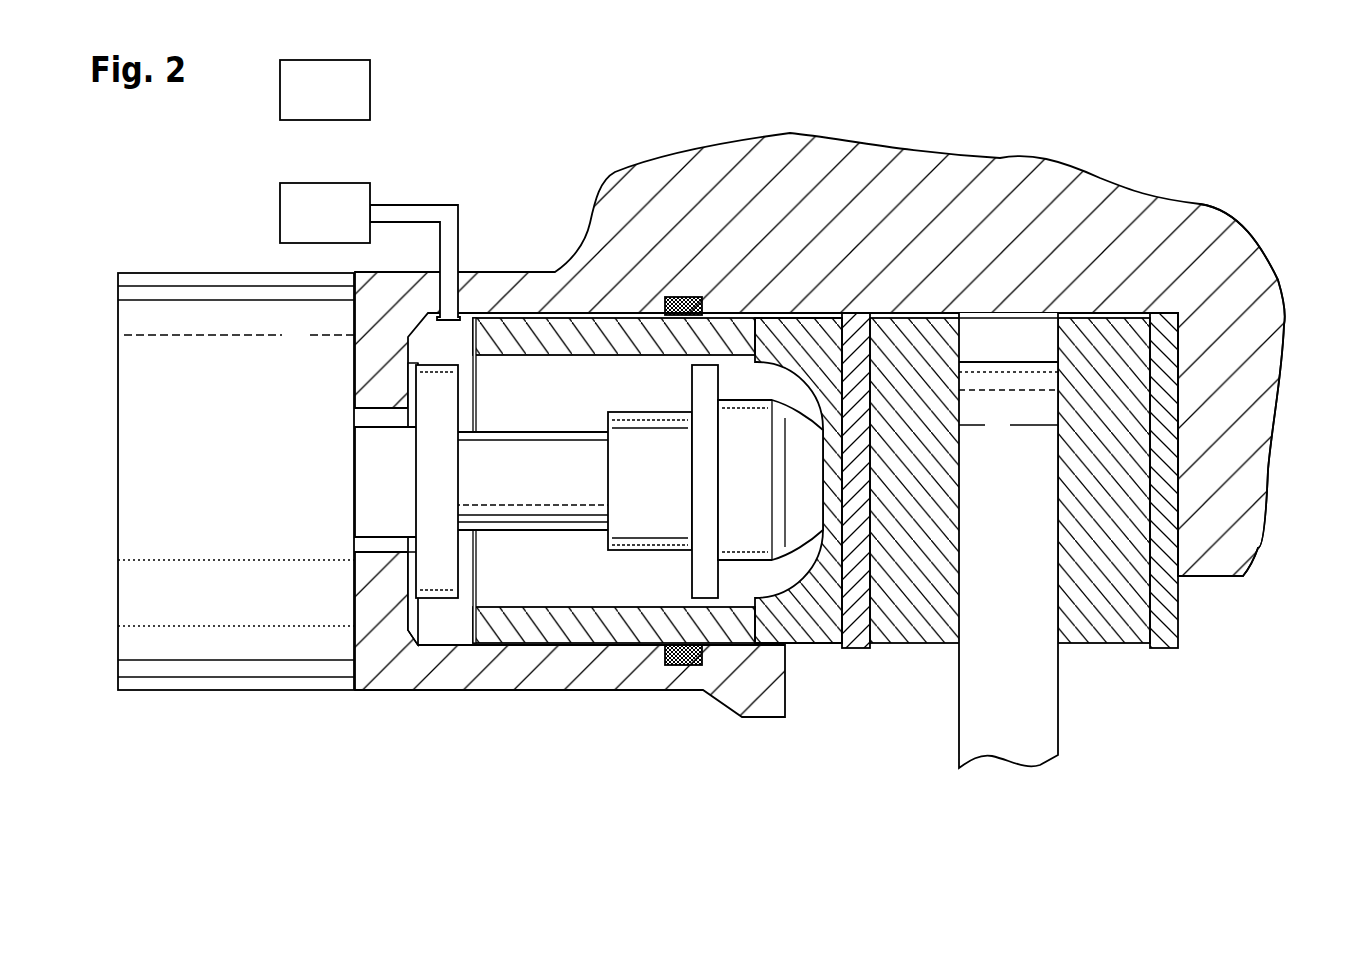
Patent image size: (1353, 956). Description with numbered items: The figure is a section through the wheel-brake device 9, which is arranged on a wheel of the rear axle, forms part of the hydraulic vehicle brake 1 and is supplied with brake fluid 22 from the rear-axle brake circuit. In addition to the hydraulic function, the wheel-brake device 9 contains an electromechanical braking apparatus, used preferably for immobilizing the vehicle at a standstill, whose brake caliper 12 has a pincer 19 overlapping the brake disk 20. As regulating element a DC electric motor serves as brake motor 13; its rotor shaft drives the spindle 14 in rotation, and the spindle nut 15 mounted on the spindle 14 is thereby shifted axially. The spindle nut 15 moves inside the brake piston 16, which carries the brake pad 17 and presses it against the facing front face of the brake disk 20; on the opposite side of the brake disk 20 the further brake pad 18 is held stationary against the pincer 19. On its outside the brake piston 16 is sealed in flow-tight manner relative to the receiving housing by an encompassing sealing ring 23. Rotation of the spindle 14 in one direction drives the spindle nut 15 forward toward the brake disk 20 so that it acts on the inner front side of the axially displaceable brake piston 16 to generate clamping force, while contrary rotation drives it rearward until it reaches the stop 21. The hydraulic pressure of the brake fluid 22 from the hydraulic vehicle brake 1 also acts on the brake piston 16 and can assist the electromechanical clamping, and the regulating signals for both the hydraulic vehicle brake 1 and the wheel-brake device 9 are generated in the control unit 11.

The hydraulic vehicle brake 1 is at (280, 208).
The wheel-brake device 9 is at (1180, 151).
The control unit 11 is at (370, 88).
The brake caliper 12 is at (907, 178).
The brake motor 13 is at (237, 668).
The spindle 14 is at (573, 517).
The spindle nut 15 is at (625, 543).
The brake piston 16 is at (527, 627).
The brake pad 17 is at (912, 645).
The further brake pad 18 is at (1098, 645).
The pincer 19 is at (1242, 438).
The brake disk 20 is at (1003, 745).
The stop 21 is at (437, 598).
The brake fluid 22 is at (458, 632).
The sealing ring 23 is at (683, 667).